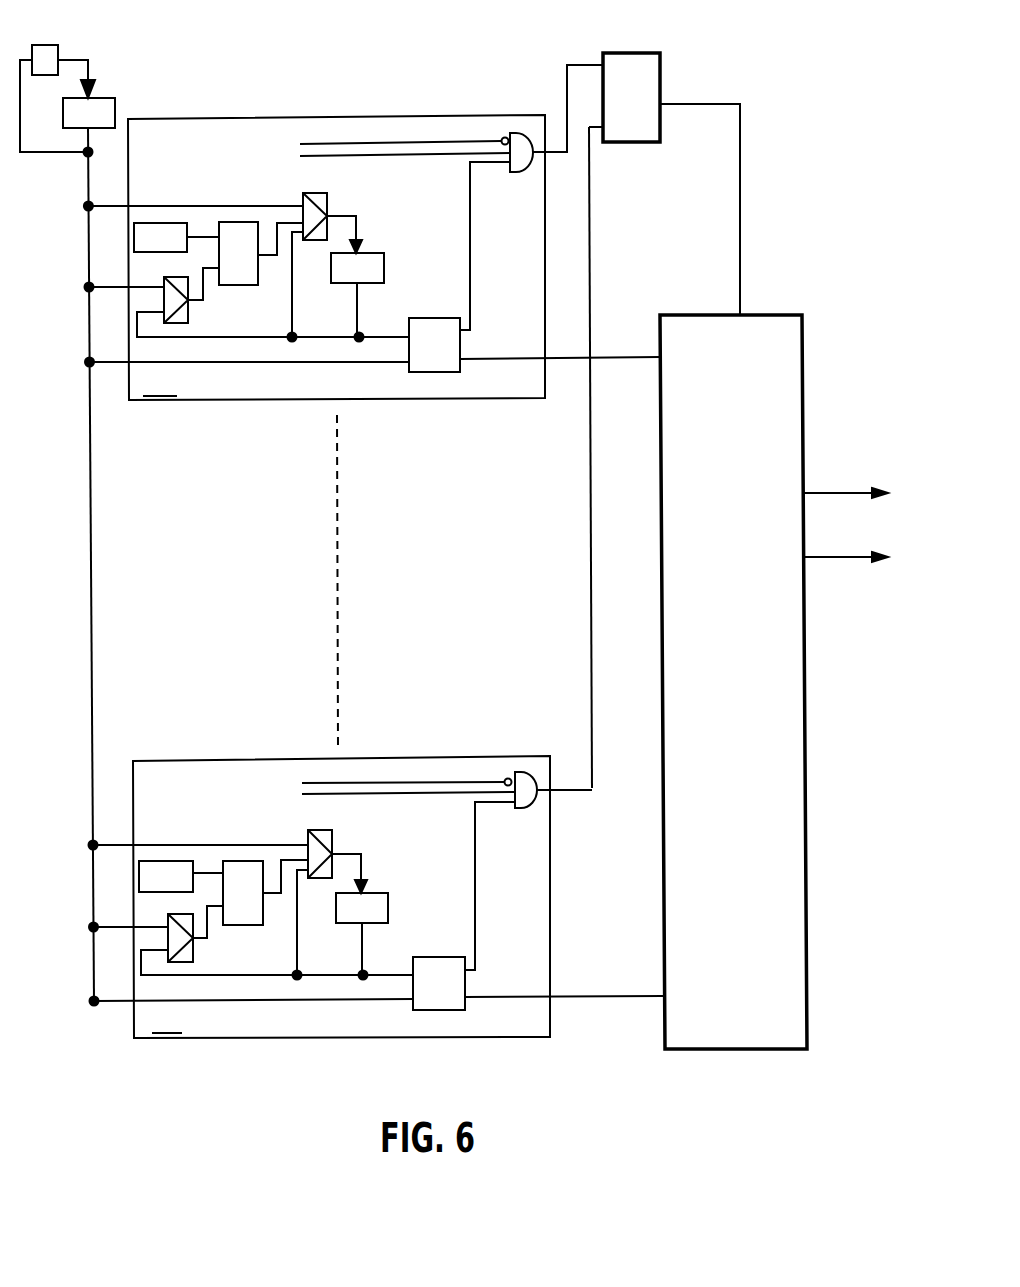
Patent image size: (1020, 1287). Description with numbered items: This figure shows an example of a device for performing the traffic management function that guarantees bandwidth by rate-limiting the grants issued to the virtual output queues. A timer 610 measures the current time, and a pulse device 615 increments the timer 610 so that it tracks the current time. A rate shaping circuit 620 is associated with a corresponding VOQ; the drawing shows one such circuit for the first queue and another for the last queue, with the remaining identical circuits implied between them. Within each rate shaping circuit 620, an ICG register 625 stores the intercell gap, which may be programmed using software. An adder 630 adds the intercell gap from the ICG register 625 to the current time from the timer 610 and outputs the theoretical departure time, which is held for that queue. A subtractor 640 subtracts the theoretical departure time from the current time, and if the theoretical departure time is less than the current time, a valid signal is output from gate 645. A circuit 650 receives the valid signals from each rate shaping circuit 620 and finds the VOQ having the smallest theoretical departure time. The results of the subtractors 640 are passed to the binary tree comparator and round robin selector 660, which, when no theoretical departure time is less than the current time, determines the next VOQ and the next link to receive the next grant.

The timer 610 is at (112, 98).
The pulse device 615 is at (58, 46).
The rate shaping circuit 620 is at (319, 576).
The ICG register 625 is at (134, 233).
The adder 630 is at (244, 286).
The subtractor 640 is at (461, 341).
The valid signal output 645 is at (516, 173).
The circuit 650 is at (661, 139).
The binary tree comparator and round robin selector 660 is at (728, 981).